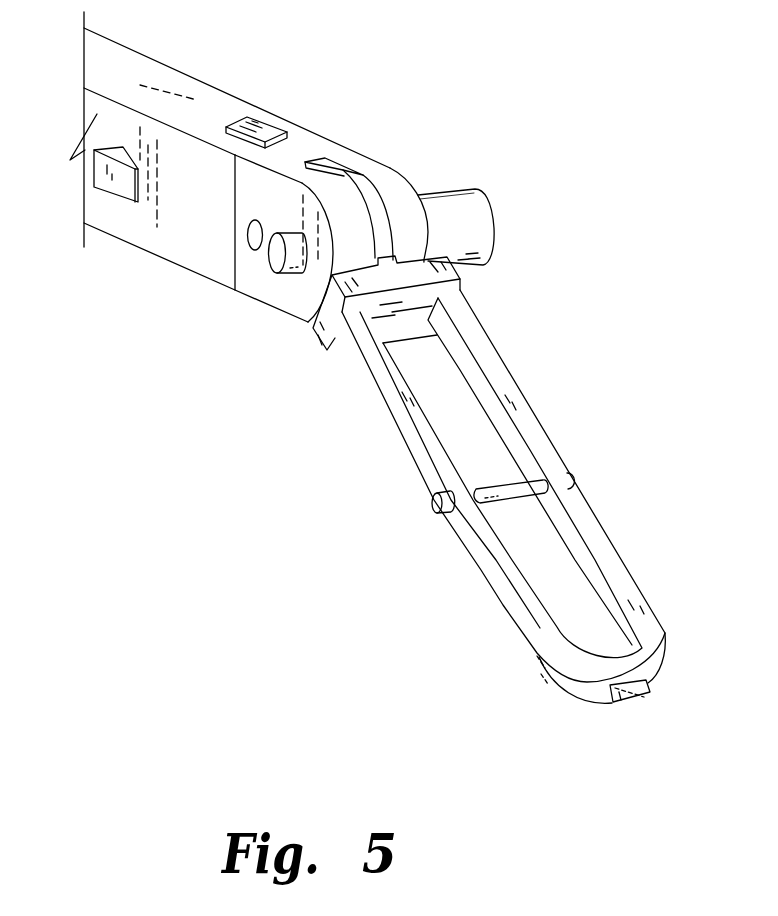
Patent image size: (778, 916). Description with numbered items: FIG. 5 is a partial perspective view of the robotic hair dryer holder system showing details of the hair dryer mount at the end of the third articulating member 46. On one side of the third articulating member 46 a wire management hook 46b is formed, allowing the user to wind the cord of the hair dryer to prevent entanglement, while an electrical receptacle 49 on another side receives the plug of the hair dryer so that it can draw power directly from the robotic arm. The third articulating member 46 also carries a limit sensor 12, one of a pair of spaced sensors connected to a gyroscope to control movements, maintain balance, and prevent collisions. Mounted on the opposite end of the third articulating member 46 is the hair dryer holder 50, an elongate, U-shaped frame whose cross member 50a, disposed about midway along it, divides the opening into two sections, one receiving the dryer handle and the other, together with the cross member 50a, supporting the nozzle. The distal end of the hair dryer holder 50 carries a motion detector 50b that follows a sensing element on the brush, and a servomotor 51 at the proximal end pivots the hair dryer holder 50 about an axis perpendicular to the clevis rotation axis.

The limit sensors 12 is at (253, 250).
The third articulating member 46 is at (157, 253).
The wire management hook 46b is at (113, 198).
The electrical receptacle 49 is at (257, 120).
The hair dryer holder 50 is at (393, 420).
The cross member 50a is at (508, 487).
The motion detector 50b is at (621, 705).
The servomotor 51 is at (488, 201).